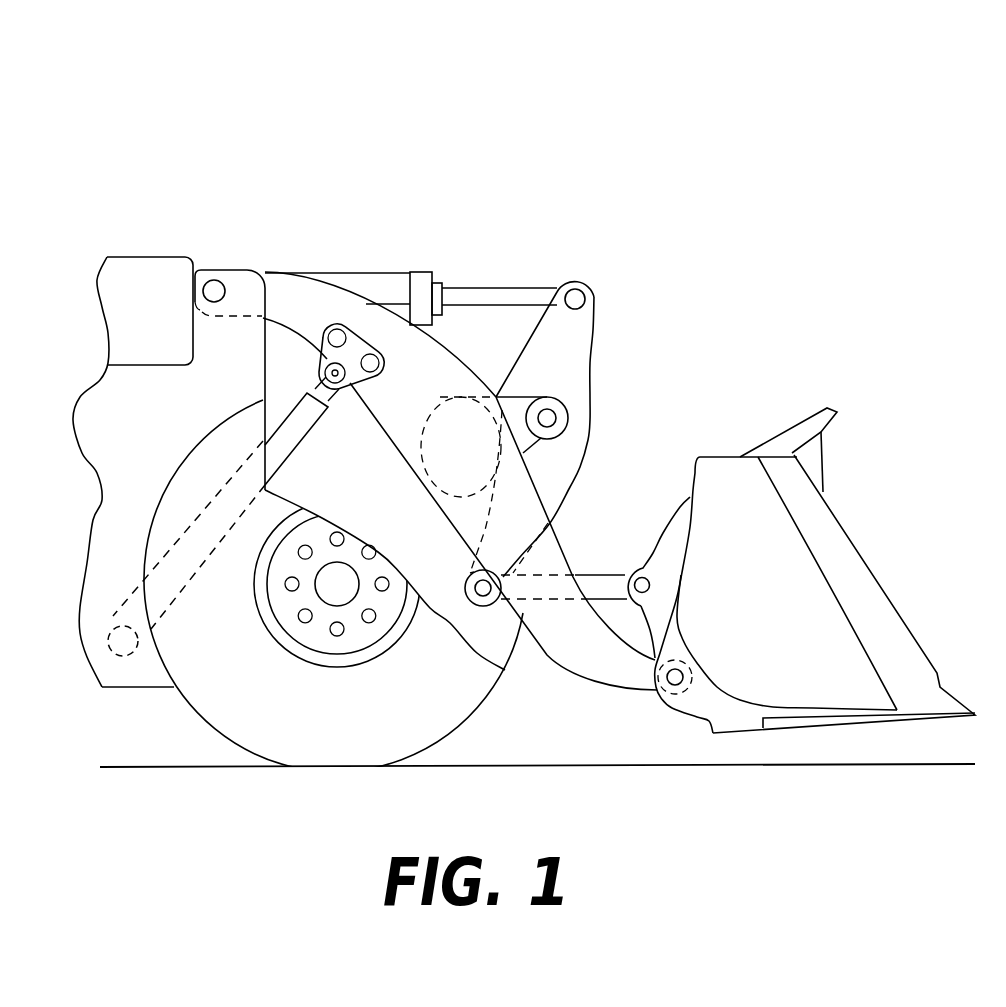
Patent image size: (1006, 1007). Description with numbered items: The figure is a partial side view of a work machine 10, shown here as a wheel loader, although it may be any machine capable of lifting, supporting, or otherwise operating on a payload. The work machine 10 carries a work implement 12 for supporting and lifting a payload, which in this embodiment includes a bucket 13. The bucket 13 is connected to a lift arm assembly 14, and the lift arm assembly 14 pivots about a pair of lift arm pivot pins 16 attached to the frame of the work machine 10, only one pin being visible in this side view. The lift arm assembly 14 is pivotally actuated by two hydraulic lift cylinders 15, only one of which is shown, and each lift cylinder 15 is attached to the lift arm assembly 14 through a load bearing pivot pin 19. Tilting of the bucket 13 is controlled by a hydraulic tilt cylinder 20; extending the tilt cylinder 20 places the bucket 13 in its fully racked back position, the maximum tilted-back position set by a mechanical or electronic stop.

The work machine 10 is at (680, 135).
The work implement 12 is at (686, 353).
The bucket 13 is at (778, 430).
The lift arm assembly 14 is at (297, 293).
The hydraulic lift cylinder 15 is at (217, 525).
The lift arm pivot pin 16 is at (214, 281).
The load bearing pivot pin 19 is at (323, 370).
The hydraulic tilt cylinder 20 is at (390, 293).